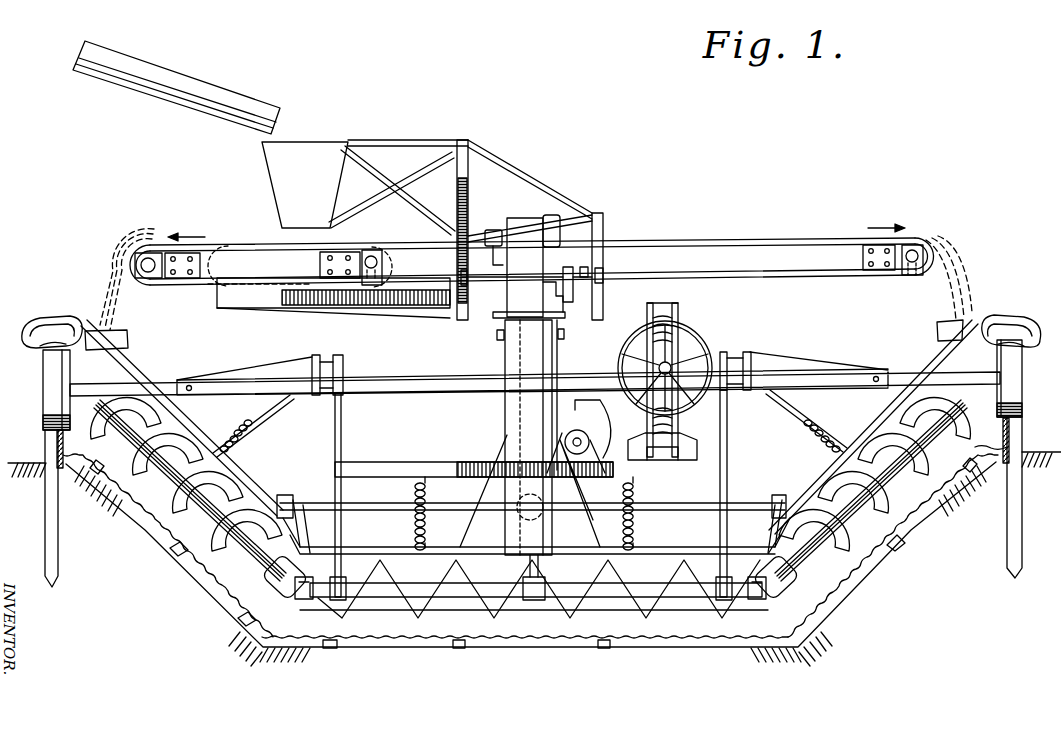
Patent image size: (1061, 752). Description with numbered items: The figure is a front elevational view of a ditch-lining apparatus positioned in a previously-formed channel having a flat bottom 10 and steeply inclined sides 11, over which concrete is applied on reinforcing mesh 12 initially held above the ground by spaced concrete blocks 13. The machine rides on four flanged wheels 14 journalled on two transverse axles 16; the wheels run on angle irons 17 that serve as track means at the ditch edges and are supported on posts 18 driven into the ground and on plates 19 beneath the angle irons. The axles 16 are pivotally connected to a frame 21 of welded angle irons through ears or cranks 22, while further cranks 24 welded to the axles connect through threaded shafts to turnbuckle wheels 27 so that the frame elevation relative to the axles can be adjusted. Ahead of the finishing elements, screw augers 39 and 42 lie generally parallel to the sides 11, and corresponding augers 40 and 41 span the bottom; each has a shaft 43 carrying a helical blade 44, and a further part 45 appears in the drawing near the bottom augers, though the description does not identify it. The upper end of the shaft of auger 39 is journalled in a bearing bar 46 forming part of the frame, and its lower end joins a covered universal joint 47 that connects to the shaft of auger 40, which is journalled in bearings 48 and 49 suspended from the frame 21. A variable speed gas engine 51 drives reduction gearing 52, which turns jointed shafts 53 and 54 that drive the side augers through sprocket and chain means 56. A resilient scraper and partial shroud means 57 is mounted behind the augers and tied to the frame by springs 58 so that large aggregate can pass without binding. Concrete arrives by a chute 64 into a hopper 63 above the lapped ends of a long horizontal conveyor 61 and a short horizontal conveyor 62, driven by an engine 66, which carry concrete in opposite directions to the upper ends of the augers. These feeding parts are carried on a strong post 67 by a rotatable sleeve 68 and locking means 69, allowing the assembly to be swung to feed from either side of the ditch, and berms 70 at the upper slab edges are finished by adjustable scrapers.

The flat bottom 10 is at (505, 647).
The inclined sides 11 is at (200, 577).
The reinforcing mesh 12 is at (433, 643).
The concrete blocks 13 is at (606, 649).
The wheels 14 is at (43, 388).
The axles 16 is at (468, 395).
The angle irons 17 is at (57, 433).
The posts 18 is at (58, 578).
The plates 19 is at (72, 486).
The frame 21 is at (235, 372).
The ears or cranks 22 is at (345, 364).
The cranks 24 is at (676, 312).
The turnbuckle wheels 27 is at (700, 334).
The screw auger 39 is at (180, 520).
The auger 40 is at (400, 618).
The auger 41 is at (645, 618).
The screw auger 42 is at (932, 462).
The shaft 43 is at (266, 572).
The helical blade 44 is at (848, 545).
The bottom trough 45 is at (466, 592).
The bearing bar 46 is at (1005, 322).
The covered universal joint 47 is at (298, 600).
The bearing 48 is at (345, 602).
The bearing 49 is at (540, 598).
The variable speed gas engine 51 is at (588, 425).
The reduction gearing 52 is at (512, 530).
The jointed shaft 53 is at (408, 512).
The jointed shaft 54 is at (748, 503).
The sprocket and chain means 56 is at (60, 320).
The scraper and partial shroud means 57 is at (250, 487).
The springs 58 is at (255, 437).
The long horizontal conveyor 61 is at (717, 220).
The short horizontal conveyor 62 is at (201, 248).
The hopper 63 is at (314, 143).
The chute 64 is at (172, 73).
The engine 66 is at (535, 220).
The post 67 is at (512, 448).
The rotatable sleeve 68 is at (500, 344).
The locking means 69 is at (562, 336).
The berms 70 is at (978, 443).